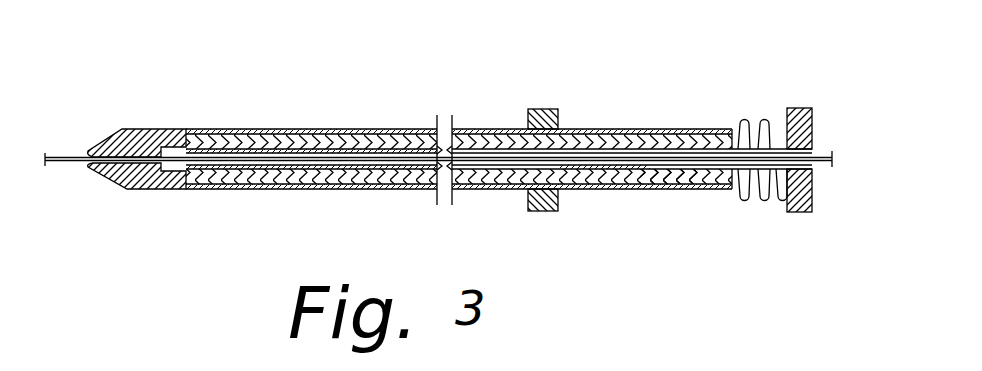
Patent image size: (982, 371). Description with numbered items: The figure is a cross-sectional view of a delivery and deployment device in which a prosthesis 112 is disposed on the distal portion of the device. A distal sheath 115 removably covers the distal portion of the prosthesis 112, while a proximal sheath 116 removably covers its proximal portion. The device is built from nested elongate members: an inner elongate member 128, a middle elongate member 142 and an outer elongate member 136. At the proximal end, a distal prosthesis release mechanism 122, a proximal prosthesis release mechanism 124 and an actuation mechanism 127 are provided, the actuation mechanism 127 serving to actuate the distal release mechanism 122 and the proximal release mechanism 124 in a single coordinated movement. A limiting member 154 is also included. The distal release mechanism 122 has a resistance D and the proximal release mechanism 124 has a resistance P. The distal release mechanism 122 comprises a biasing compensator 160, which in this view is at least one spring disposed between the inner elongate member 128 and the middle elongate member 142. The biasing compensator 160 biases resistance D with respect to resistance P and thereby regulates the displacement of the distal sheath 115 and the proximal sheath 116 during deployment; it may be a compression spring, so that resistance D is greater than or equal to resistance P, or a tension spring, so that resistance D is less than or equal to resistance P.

The distal sheath 115 is at (198, 129).
The prosthesis 112 is at (300, 129).
The proximal sheath 116 is at (352, 129).
The outer elongate member 136 is at (420, 129).
The proximal prosthesis release mechanism 124 is at (549, 107).
The actuation mechanism 127 is at (698, 99).
The middle elongate member 142 is at (607, 189).
The inner elongate member 128 is at (666, 184).
The limiting member 154 is at (714, 196).
The biasing compensator 160 is at (765, 122).
The distal prosthesis release mechanism 122 is at (816, 216).